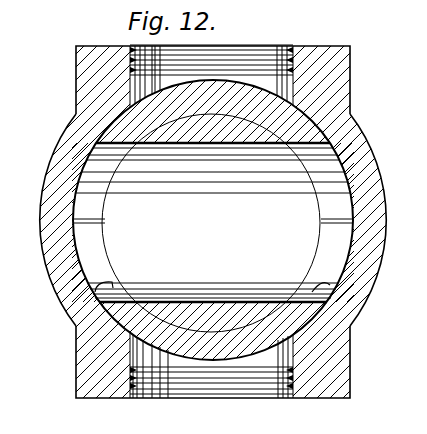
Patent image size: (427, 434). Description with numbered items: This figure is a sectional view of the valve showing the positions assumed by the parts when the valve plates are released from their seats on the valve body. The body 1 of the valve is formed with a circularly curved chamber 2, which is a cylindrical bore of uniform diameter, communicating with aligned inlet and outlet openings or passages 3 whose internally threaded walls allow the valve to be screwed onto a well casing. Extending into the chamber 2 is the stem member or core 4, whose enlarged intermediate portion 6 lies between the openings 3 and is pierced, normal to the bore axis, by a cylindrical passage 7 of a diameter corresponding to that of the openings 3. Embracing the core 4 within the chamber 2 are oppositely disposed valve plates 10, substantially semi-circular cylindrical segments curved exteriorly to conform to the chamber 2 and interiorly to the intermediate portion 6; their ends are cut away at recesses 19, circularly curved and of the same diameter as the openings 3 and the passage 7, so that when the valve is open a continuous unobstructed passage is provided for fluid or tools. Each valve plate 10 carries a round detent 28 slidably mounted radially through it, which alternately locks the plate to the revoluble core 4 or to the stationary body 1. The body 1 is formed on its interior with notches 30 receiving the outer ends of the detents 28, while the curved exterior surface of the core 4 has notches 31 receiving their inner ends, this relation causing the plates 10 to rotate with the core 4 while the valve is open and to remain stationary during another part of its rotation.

The body 1 is at (352, 389).
The chamber 2 is at (75, 262).
The openings or passages 3 is at (132, 63).
The stem member or core 4 is at (275, 115).
The intermediate portion 6 is at (165, 316).
The passage 7 is at (200, 297).
The valve plates 10 is at (263, 128).
The openings or recesses 19 is at (97, 287).
The detent 28 is at (150, 133).
The recesses or notches 30 is at (307, 358).
The notches 31 is at (158, 127).